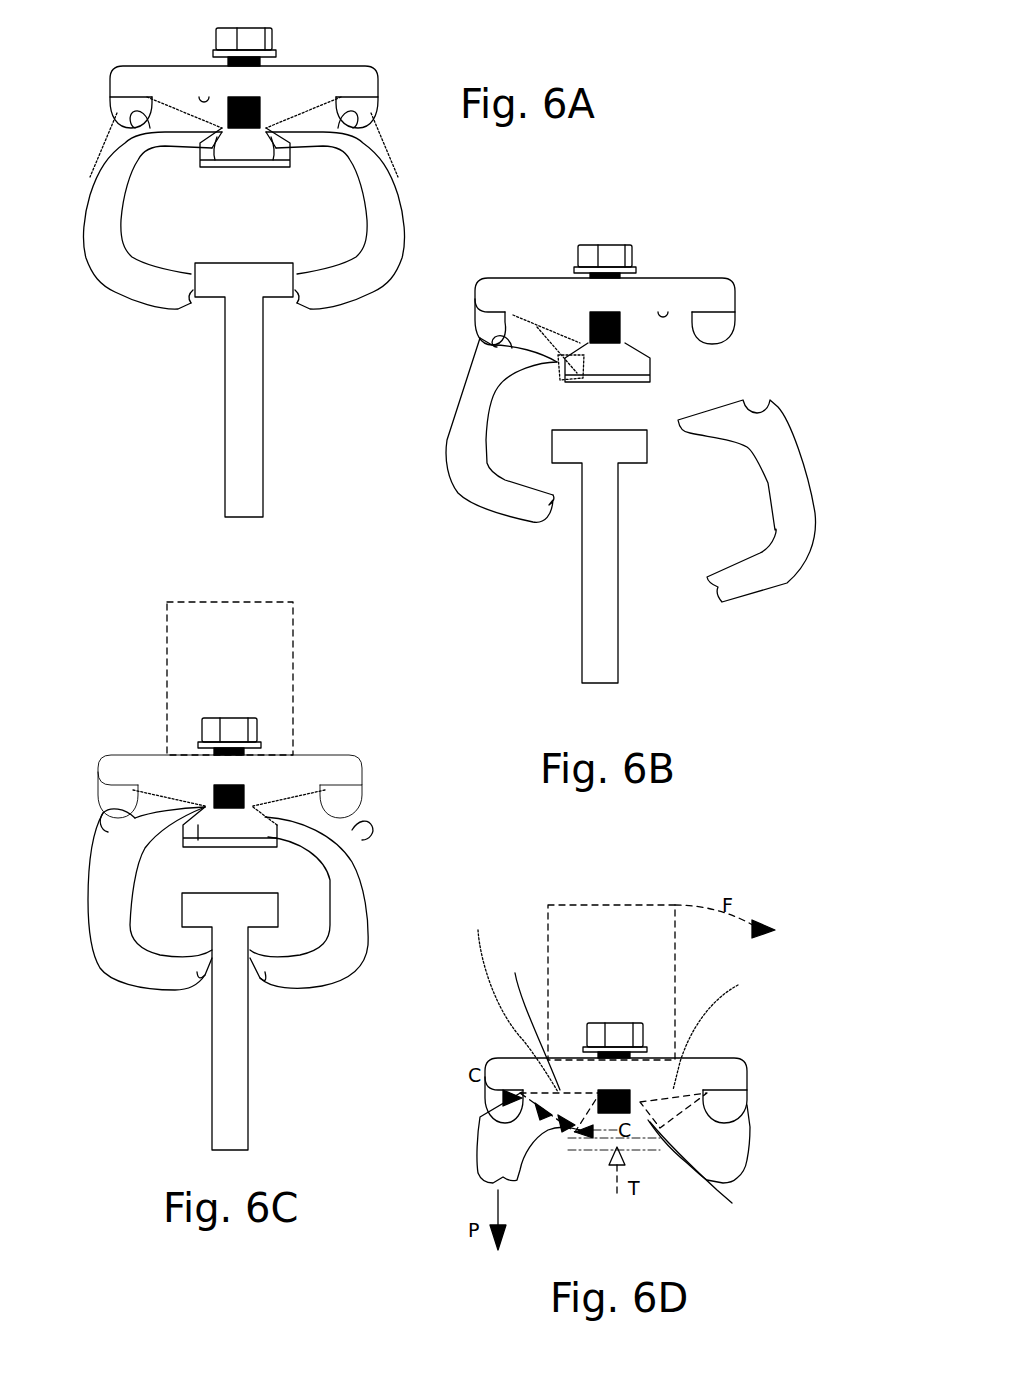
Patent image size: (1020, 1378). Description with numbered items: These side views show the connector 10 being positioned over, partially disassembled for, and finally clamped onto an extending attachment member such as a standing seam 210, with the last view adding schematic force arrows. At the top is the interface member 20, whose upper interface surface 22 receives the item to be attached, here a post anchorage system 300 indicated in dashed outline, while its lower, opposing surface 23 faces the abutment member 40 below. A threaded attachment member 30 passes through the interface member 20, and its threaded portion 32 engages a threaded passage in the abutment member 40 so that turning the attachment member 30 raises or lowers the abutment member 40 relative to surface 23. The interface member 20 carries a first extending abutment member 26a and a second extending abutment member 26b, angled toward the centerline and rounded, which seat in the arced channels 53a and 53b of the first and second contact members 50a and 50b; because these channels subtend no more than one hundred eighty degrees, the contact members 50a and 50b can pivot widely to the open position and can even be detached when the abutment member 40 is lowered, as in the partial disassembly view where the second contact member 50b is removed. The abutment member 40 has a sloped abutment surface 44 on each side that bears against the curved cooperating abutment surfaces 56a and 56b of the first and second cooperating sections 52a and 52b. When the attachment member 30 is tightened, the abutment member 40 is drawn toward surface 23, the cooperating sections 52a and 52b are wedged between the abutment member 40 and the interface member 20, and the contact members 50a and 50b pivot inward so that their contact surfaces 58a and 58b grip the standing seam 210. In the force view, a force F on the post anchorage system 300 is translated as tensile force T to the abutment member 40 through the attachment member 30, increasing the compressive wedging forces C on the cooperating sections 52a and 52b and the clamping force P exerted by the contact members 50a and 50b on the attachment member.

In FIG. 6A, the connector 10 is at (102, 62).
In FIG. 6B, the connector 10 is at (727, 249).
In FIG. 6C, the connector 10 is at (328, 660).
In FIG. 6D, the connector 10 is at (440, 1148).
In FIG. 6A, the interface member 20 is at (237, 73).
In FIG. 6B, the interface member 20 is at (608, 286).
In FIG. 6C, the interface member 20 is at (238, 722).
In FIG. 6D, the interface member 20 is at (610, 1061).
In FIG. 6A, the interface surface 22 is at (360, 66).
In FIG. 6B, the interface surface 22 is at (715, 280).
In FIG. 6C, the interface surface 22 is at (345, 757).
In FIG. 6D, the interface surface 22 is at (710, 1058).
In FIG. 6A, the lower opposing surface 23 is at (205, 95).
In FIG. 6B, the lower opposing surface 23 is at (678, 312).
In FIG. 6A, the first extending abutment member 26a is at (113, 97).
In FIG. 6B, the first extending abutment member 26a is at (478, 295).
In FIG. 6C, the first extending abutment member 26a is at (100, 780).
In FIG. 6D, the first extending abutment member 26a is at (745, 1095).
In FIG. 6A, the second extending abutment member 26b is at (370, 97).
In FIG. 6B, the second extending abutment member 26b is at (732, 315).
In FIG. 6C, the second extending abutment member 26b is at (340, 800).
In FIG. 6D, the second extending abutment member 26b is at (495, 1110).
In FIG. 6A, the threaded attachment member 30 is at (286, 74).
In FIG. 6B, the threaded attachment member 30 is at (611, 267).
In FIG. 6C, the threaded attachment member 30 is at (271, 745).
In FIG. 6D, the threaded attachment member 30 is at (660, 1015).
In FIG. 6A, the threaded portion 32 is at (267, 62).
In FIG. 6B, the threaded portion 32 is at (620, 312).
In FIG. 6C, the threaded portion 32 is at (262, 747).
In FIG. 6A, the abutment member 40 is at (250, 170).
In FIG. 6B, the abutment member 40 is at (597, 385).
In FIG. 6C, the abutment member 40 is at (224, 855).
In FIG. 6D, the abutment member 40 is at (593, 1160).
In FIG. 6A, the sloped abutment surface 44 is at (217, 137).
In FIG. 6B, the sloped abutment surface 44 is at (568, 362).
In FIG. 6C, the sloped abutment surface 44 is at (195, 845).
In FIG. 6D, the sloped abutment surface 44 is at (570, 1132).
In FIG. 6A, the first contact member 50a is at (118, 231).
In FIG. 6B, the first contact member 50a is at (470, 398).
In FIG. 6C, the first contact member 50a is at (121, 862).
In FIG. 6D, the first contact member 50a is at (483, 1090).
In FIG. 6A, the second contact member 50b is at (371, 246).
In FIG. 6B, the second contact member 50b is at (734, 505).
In FIG. 6C, the second contact member 50b is at (346, 902).
In FIG. 6D, the second contact member 50b is at (740, 1162).
In FIG. 6A, the first cooperating section 52a is at (187, 123).
In FIG. 6B, the first cooperating section 52a is at (520, 330).
In FIG. 6C, the first cooperating section 52a is at (130, 800).
In FIG. 6D, the first cooperating section 52a is at (505, 1001).
In FIG. 6A, the second cooperating section 52b is at (303, 112).
In FIG. 6B, the second cooperating section 52b is at (717, 417).
In FIG. 6C, the second cooperating section 52b is at (305, 782).
In FIG. 6D, the second cooperating section 52b is at (724, 1027).
In FIG. 6A, the first channel 53a is at (110, 132).
In FIG. 6B, the first channel 53a is at (476, 350).
In FIG. 6C, the first channel 53a is at (105, 820).
In FIG. 6D, the first channel 53a is at (485, 1132).
In FIG. 6A, the second channel 53b is at (374, 118).
In FIG. 6B, the second channel 53b is at (770, 400).
In FIG. 6C, the second channel 53b is at (350, 815).
In FIG. 6D, the second channel 53b is at (730, 1135).
In FIG. 6A, the first cooperating abutment surface 56a is at (100, 166).
In FIG. 6B, the first cooperating abutment surface 56a is at (555, 345).
In FIG. 6C, the first cooperating abutment surface 56a is at (163, 800).
In FIG. 6A, the second cooperating abutment surface 56b is at (386, 152).
In FIG. 6B, the second cooperating abutment surface 56b is at (688, 440).
In FIG. 6C, the second cooperating abutment surface 56b is at (360, 830).
In FIG. 6D, the second cooperating abutment surface 56b is at (732, 1203).
In FIG. 6A, the first contact surface 58a is at (190, 302).
In FIG. 6B, the first contact surface 58a is at (553, 505).
In FIG. 6C, the first contact surface 58a is at (177, 990).
In FIG. 6A, the second contact surface 58b is at (300, 307).
In FIG. 6B, the second contact surface 58b is at (707, 590).
In FIG. 6C, the second contact surface 58b is at (285, 975).
In FIG. 6A, the standing seam 210 is at (222, 382).
In FIG. 6B, the standing seam 210 is at (590, 580).
In FIG. 6C, the standing seam 210 is at (208, 1052).
In FIG. 6C, the post anchorage system 300 is at (246, 662).
In FIG. 6D, the post anchorage system 300 is at (626, 960).